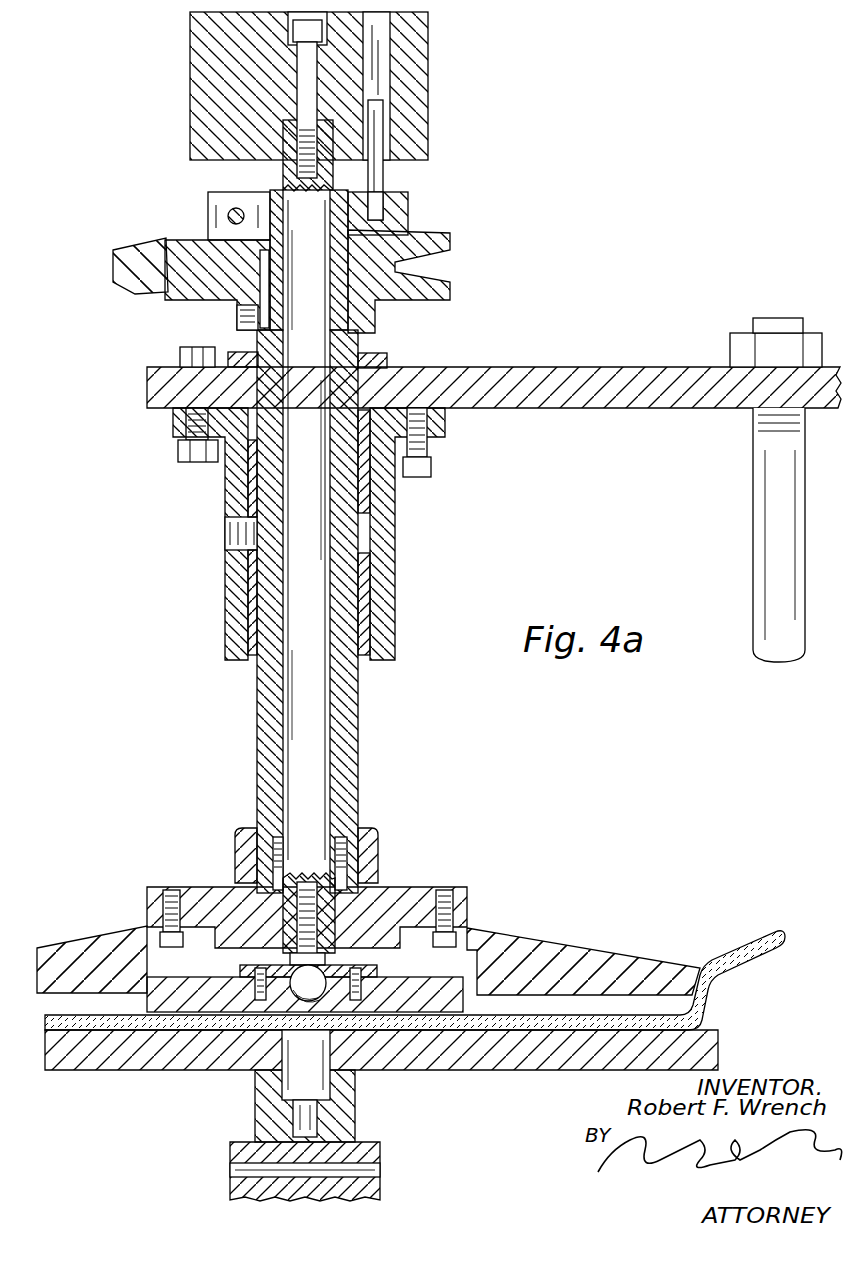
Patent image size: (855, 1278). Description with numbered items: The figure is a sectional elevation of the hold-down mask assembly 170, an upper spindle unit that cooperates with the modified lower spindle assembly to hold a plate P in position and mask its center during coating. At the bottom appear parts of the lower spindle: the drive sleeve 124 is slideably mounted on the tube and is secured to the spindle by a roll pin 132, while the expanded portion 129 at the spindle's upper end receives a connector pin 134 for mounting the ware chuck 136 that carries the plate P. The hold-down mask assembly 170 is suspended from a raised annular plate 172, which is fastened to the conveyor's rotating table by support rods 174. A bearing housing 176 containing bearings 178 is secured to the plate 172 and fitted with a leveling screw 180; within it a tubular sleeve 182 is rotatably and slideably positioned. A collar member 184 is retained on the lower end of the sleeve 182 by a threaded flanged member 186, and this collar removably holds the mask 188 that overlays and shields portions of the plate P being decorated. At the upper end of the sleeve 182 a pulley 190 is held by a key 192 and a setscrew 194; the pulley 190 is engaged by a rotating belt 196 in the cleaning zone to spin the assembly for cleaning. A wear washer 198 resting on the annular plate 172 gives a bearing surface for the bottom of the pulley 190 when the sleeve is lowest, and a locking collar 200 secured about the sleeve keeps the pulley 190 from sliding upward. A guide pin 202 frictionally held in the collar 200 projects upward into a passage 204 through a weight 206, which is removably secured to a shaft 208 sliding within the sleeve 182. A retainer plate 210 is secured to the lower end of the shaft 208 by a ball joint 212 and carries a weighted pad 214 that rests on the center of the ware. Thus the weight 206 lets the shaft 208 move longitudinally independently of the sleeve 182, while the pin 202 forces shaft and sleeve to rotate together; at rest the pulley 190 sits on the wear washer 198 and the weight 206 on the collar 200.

The drive sleeve 124 is at (372, 1196).
The expanded portion 129 is at (345, 1136).
The roll pin 132 is at (240, 1172).
The connector pin 134 is at (290, 1073).
The ware chuck 136 is at (720, 1046).
The hold-down mask assembly 170 is at (360, 708).
The annular plate 172 is at (576, 367).
The support rods 174 is at (755, 495).
The bearing housing 176 is at (382, 533).
The bearings 178 is at (250, 483).
The leveling screw 180 is at (431, 466).
The tubular sleeve 182 is at (355, 762).
The collar member 184 is at (418, 887).
The threaded flanged member 186 is at (390, 950).
The mask 188 is at (625, 928).
The pulley 190 is at (393, 297).
The key 192 is at (262, 338).
The setscrew 194 is at (240, 315).
The rotating belt 196 is at (113, 266).
The wear washer 198 is at (388, 358).
The locking collar 200 is at (408, 207).
The guide pin 202 is at (390, 178).
The passage 204 is at (385, 70).
The weight 206 is at (428, 93).
The shaft 208 is at (295, 700).
The retainer plate 210 is at (256, 976).
The ball joint 212 is at (322, 976).
The weighted pad 214 is at (178, 972).
The plate P is at (745, 962).